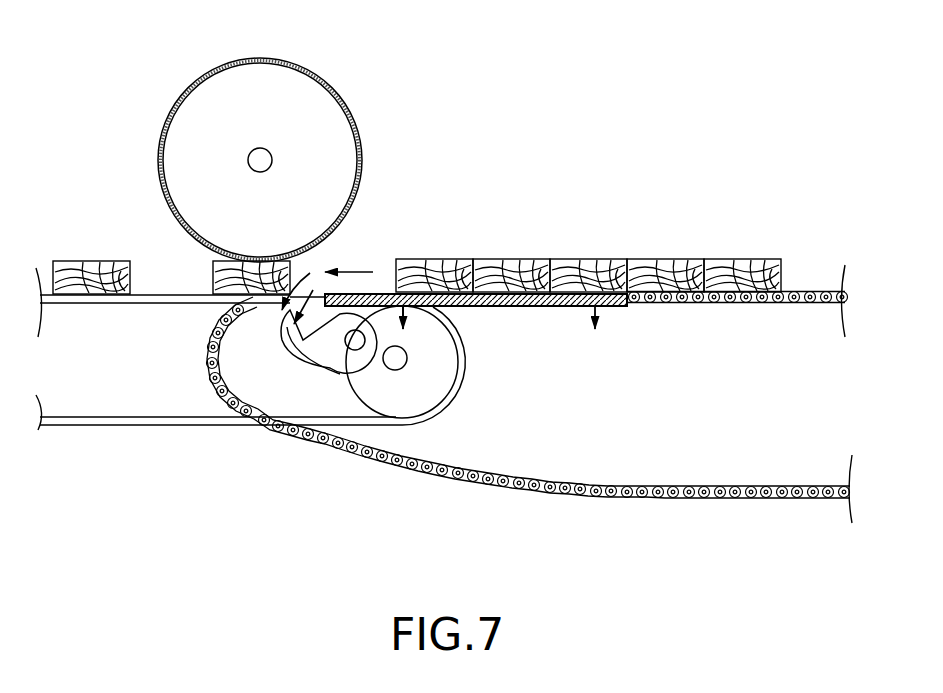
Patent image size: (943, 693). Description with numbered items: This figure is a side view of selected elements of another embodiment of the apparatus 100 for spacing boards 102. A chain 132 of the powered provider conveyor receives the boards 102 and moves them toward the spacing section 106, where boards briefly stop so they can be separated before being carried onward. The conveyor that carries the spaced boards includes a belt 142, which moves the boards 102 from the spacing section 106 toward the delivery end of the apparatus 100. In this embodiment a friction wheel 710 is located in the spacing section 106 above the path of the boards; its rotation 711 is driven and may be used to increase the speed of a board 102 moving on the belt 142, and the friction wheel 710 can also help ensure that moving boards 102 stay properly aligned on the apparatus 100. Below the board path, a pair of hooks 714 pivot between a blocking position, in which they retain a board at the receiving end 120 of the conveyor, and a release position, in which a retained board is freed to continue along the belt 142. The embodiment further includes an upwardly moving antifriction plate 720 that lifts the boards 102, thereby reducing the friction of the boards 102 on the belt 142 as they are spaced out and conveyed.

The apparatus 100 is at (770, 164).
The board 102 is at (212, 271).
The spacing section 106 is at (388, 219).
The receiving end 120 is at (355, 291).
The chain 132 is at (628, 496).
The belt 142 is at (152, 295).
The friction wheel 710 is at (290, 105).
The rotation 711 is at (213, 52).
The hooks 714 is at (318, 348).
The antifriction plate 720 is at (520, 308).